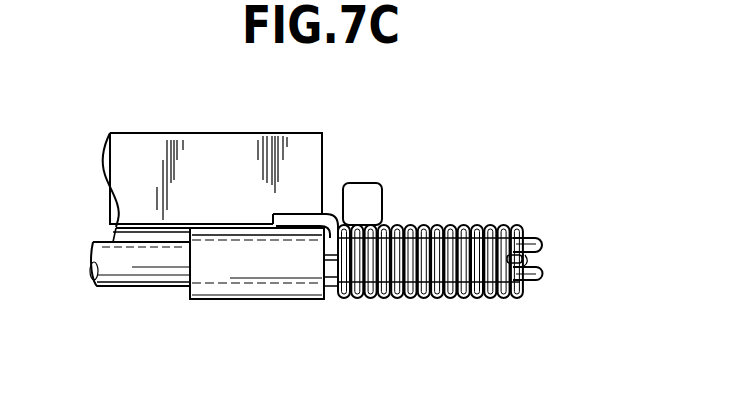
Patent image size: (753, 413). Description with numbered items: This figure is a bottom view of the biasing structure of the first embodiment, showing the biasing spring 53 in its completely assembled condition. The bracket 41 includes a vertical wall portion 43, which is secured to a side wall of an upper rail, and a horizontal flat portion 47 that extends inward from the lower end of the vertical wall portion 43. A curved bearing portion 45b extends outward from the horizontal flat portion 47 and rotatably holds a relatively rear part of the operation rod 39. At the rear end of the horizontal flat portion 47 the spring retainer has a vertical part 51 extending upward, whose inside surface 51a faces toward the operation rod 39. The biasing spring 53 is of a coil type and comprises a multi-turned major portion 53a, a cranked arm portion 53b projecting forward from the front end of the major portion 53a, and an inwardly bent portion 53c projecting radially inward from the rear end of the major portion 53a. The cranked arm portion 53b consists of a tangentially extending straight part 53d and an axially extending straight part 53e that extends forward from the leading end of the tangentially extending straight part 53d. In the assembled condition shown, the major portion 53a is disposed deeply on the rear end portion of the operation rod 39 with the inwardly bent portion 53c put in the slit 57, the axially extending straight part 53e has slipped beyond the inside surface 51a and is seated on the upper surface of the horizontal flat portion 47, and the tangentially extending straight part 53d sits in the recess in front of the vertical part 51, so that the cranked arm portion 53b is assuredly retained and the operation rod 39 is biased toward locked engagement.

The operation rod 39 is at (152, 273).
The bracket 41 is at (252, 134).
The vertical wall portion 43 is at (118, 170).
The curved bearing portion 45b is at (240, 277).
The horizontal flat portion 47 is at (118, 233).
The vertical part 51 is at (364, 183).
The inside surface 51a is at (368, 208).
The biasing spring 53 is at (433, 297).
The multi-turned major portion 53a is at (475, 290).
The cranked arm portion 53b is at (301, 226).
The inwardly bent portion 53c is at (523, 237).
The tangentially extending straight part 53d is at (324, 268).
The axially extending straight part 53e is at (287, 218).
The slit 57 is at (536, 260).